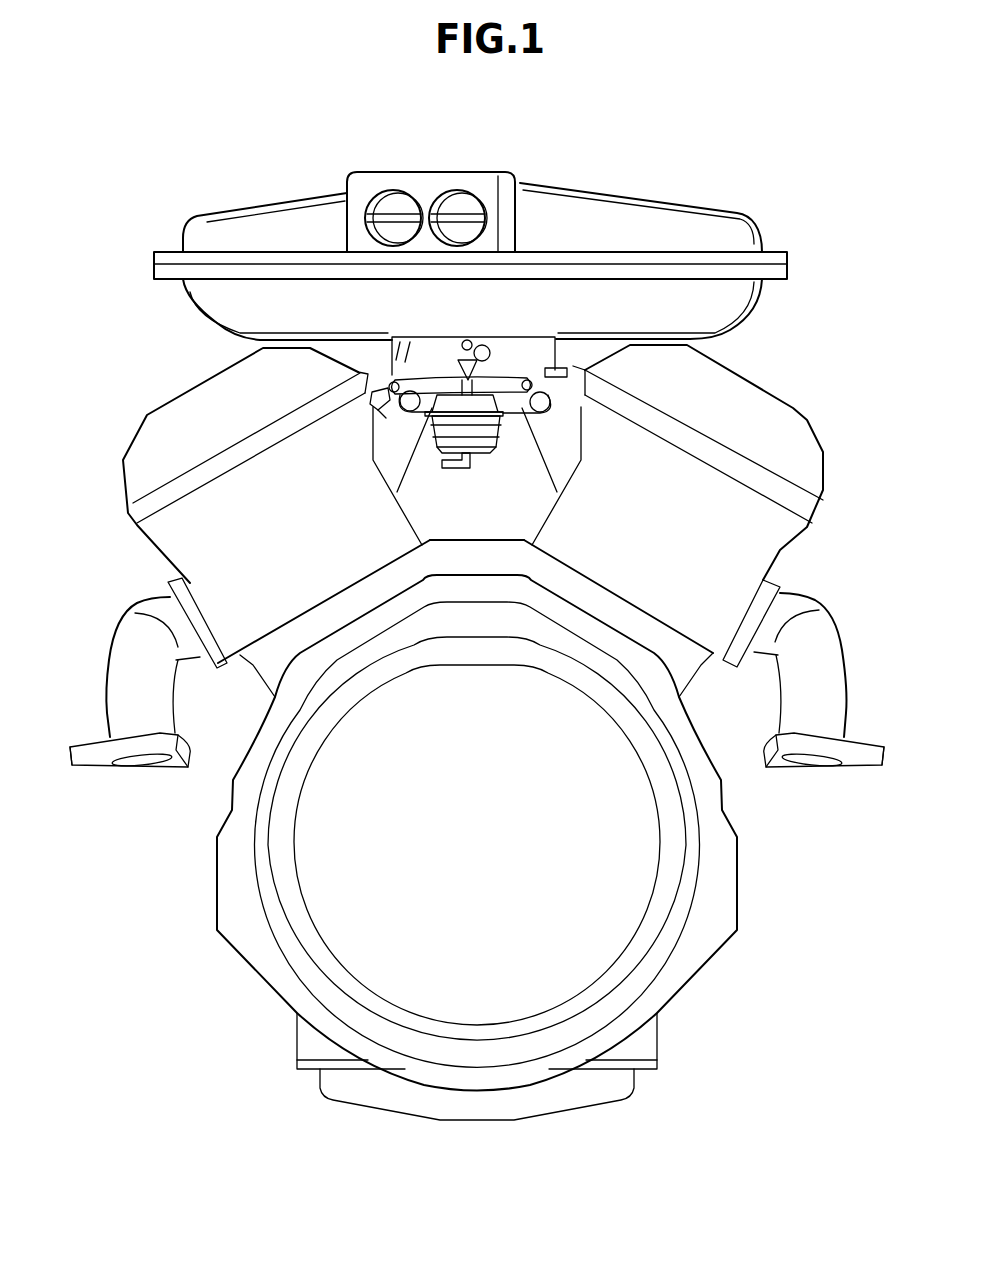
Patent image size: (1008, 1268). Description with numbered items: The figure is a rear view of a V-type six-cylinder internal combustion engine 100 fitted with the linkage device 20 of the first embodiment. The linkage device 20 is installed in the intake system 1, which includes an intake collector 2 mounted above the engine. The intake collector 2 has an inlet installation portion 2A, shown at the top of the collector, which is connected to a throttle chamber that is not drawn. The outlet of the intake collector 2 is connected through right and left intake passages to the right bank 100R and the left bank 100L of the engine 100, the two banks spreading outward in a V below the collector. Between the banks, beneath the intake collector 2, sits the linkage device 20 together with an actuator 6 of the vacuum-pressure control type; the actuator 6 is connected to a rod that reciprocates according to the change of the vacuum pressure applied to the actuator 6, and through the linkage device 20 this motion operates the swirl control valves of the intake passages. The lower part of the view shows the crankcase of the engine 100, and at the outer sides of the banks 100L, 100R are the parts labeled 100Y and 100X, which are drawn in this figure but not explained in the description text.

The intake system 1 is at (810, 260).
The intake collector 2 is at (608, 206).
The inlet installation portion 2A is at (362, 186).
The linkage device 20 is at (437, 366).
The actuator 6 is at (485, 442).
The V-type six-cylinder internal combustion engine 100 is at (697, 977).
The left bank 100L is at (165, 403).
The right bank 100R is at (789, 403).
The right exhaust pipe 100X is at (852, 768).
The left exhaust pipe 100Y is at (100, 768).